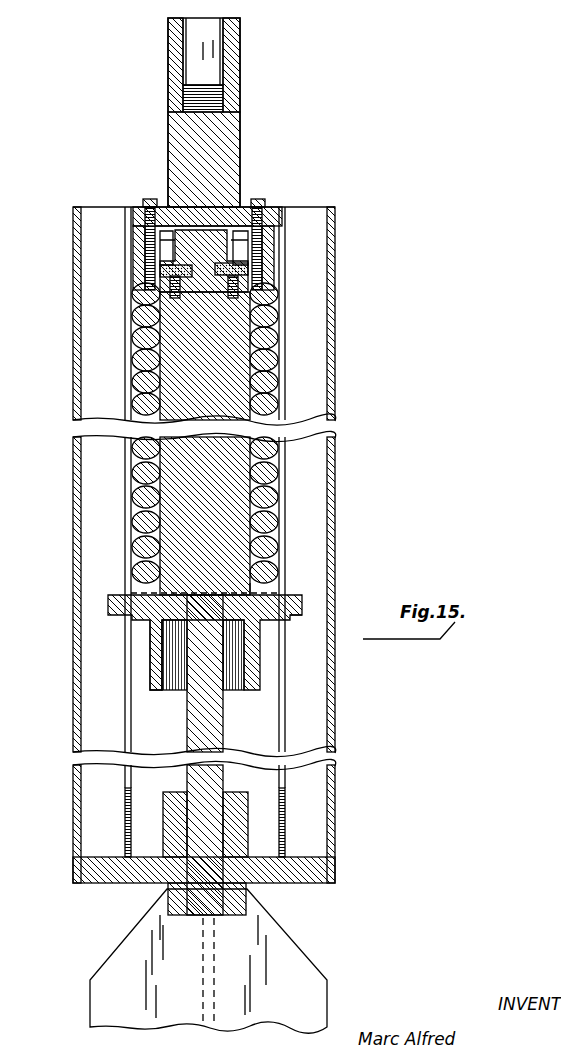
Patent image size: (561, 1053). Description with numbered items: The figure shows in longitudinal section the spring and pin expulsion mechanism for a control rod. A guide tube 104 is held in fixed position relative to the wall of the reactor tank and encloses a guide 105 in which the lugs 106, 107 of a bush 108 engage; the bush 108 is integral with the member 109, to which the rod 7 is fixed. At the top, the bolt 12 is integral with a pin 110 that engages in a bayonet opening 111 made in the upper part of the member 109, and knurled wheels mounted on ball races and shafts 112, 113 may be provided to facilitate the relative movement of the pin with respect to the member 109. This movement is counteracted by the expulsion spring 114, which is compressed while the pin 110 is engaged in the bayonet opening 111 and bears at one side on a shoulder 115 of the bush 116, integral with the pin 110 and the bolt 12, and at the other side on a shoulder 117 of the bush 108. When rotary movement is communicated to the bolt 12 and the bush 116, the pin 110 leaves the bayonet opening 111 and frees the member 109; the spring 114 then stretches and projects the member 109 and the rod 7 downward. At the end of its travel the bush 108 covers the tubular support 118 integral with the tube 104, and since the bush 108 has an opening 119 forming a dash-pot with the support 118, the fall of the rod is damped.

The rod 7 is at (105, 978).
The bolt 12 is at (168, 50).
The guide tube 104 is at (75, 460).
The guide 105 is at (292, 354).
The lug 106 is at (118, 596).
The lug 107 is at (292, 617).
The bush 108 is at (152, 645).
The member 109 is at (188, 372).
The pin 110 is at (160, 247).
The bayonet opening 111 is at (246, 258).
The shaft 112 is at (177, 255).
The shaft 113 is at (233, 252).
The expulsion spring 114 is at (143, 408).
The shoulder 115 is at (138, 302).
The bush 116 is at (158, 275).
The shoulder 117 is at (305, 588).
The tubular support 118 is at (185, 793).
The opening 119 is at (155, 665).